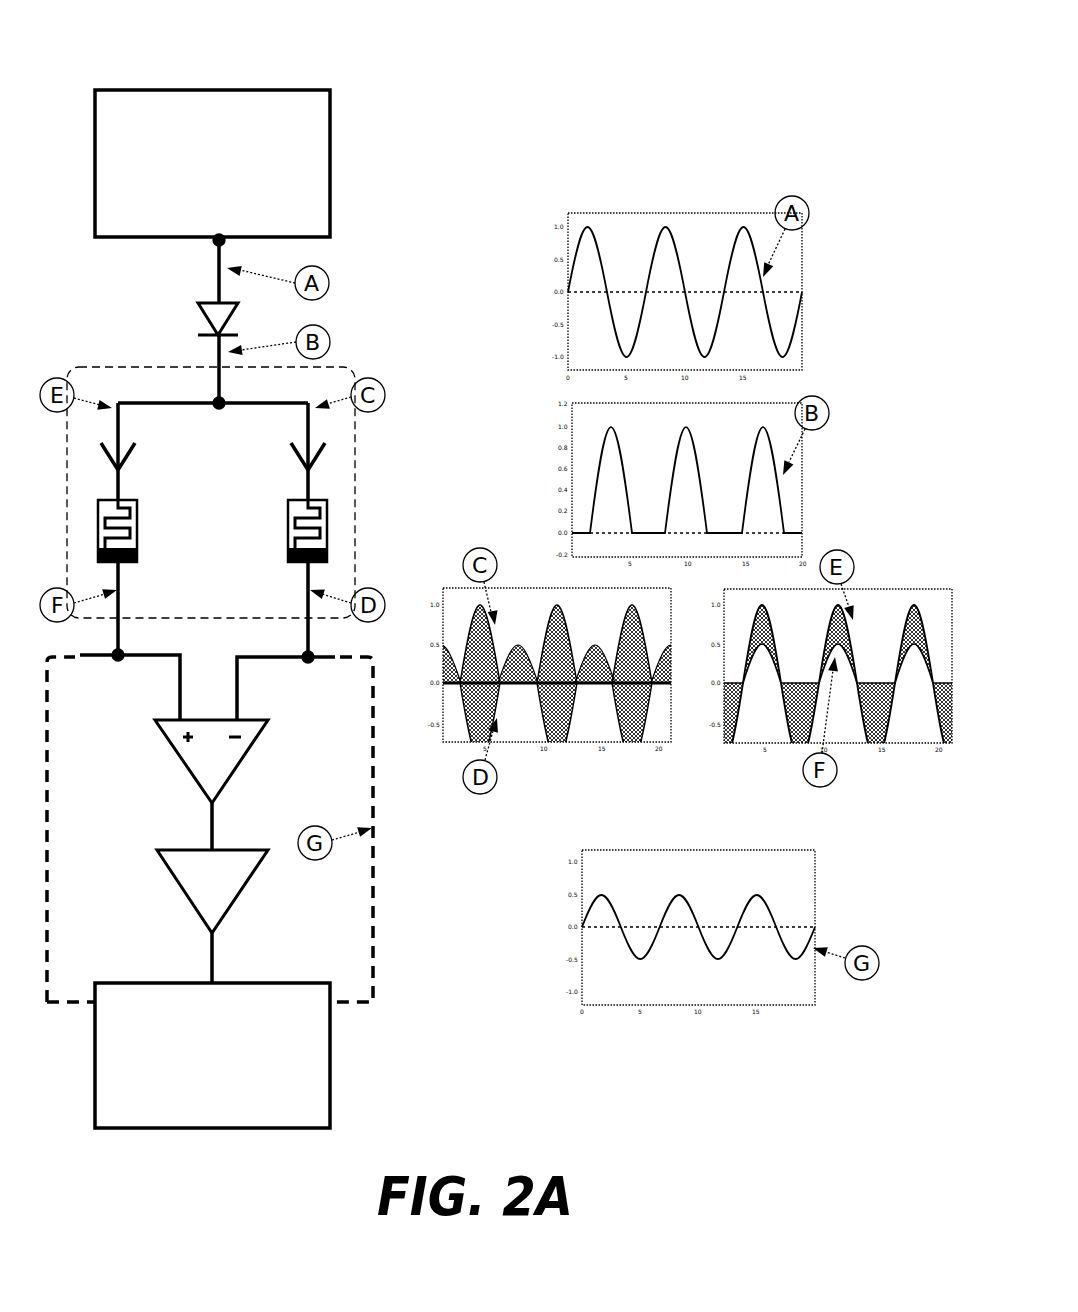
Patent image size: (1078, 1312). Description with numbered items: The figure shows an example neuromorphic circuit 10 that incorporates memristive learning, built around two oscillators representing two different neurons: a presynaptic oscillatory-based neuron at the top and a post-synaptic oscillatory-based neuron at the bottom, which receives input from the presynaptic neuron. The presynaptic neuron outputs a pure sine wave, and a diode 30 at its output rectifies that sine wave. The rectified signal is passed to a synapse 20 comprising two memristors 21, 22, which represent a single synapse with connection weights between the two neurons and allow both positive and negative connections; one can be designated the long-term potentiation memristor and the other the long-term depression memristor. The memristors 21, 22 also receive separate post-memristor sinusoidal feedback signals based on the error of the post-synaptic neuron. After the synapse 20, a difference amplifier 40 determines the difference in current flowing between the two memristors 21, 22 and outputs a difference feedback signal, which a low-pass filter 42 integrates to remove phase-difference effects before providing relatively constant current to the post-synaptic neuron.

The neuromorphic circuit 10 is at (103, 50).
The synapse 20 is at (90, 363).
The memristor 21 is at (138, 508).
The memristor 22 is at (290, 540).
The diode 30 is at (232, 308).
The difference amplifier 40 is at (228, 750).
The low-pass filter 42 is at (228, 886).